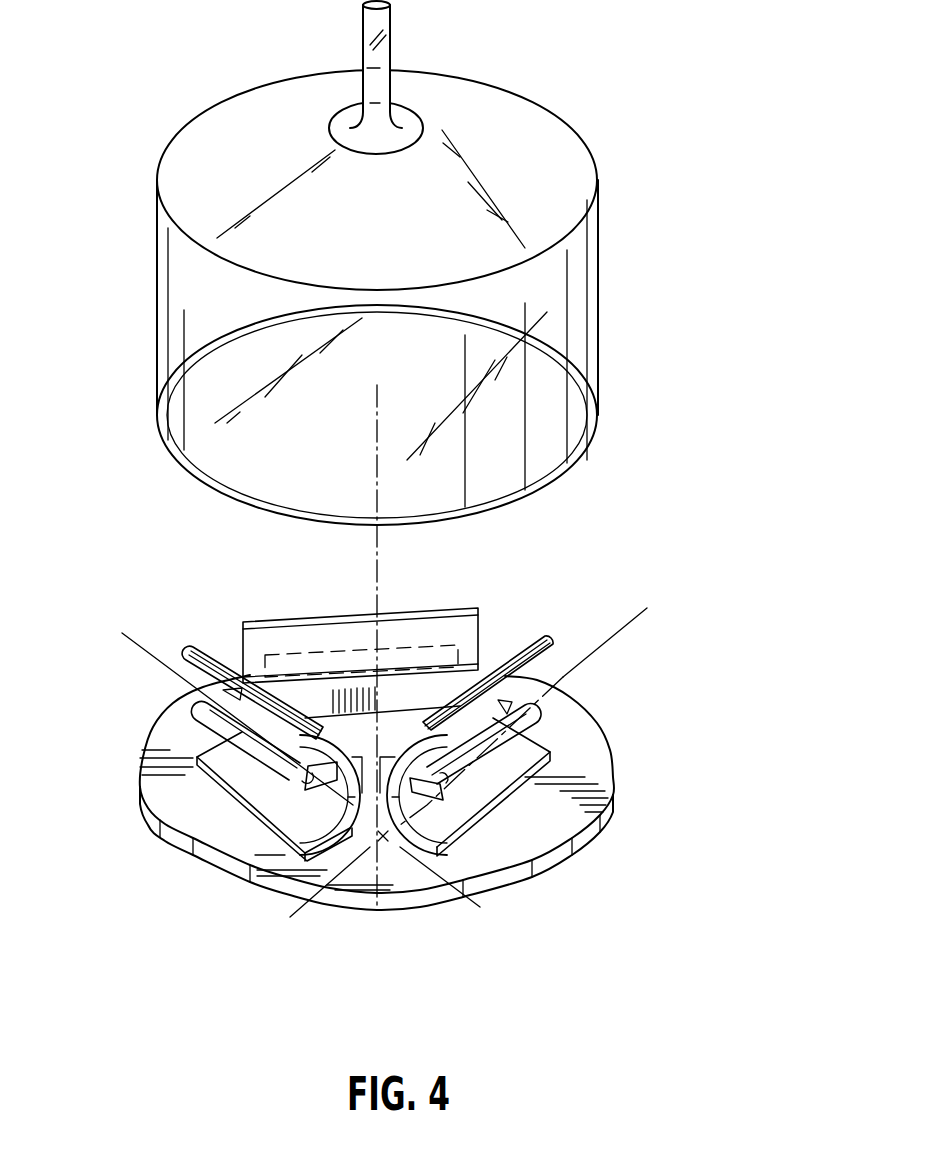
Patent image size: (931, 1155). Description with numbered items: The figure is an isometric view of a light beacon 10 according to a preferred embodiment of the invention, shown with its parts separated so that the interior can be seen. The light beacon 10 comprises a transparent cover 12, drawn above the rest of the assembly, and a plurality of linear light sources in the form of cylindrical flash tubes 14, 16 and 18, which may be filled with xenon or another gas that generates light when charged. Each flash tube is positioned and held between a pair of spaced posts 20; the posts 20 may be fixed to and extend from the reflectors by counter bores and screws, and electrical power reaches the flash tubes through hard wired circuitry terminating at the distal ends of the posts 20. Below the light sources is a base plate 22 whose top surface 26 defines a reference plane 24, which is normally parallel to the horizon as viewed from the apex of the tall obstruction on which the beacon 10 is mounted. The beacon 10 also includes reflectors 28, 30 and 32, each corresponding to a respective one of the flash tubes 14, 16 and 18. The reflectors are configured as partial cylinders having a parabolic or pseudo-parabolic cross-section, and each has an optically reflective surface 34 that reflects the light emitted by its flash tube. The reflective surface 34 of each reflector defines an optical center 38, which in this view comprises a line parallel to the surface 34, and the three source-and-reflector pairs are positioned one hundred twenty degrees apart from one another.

The light beacon 10 is at (700, 230).
The transparent cover 12 is at (533, 100).
The cylindrical flash tube 14 is at (570, 697).
The cylindrical flash tube 16 is at (222, 750).
The cylindrical flash tube 18 is at (305, 652).
The spaced posts 20 is at (300, 766).
The base plate 22 is at (613, 797).
The reference plane 24 is at (532, 833).
The top surface 26 is at (587, 753).
The reflector 28 is at (545, 637).
The reflector 30 is at (193, 647).
The reflector 32 is at (443, 608).
The optically reflective surface 34 is at (250, 780).
The optical center 38 is at (122, 633).